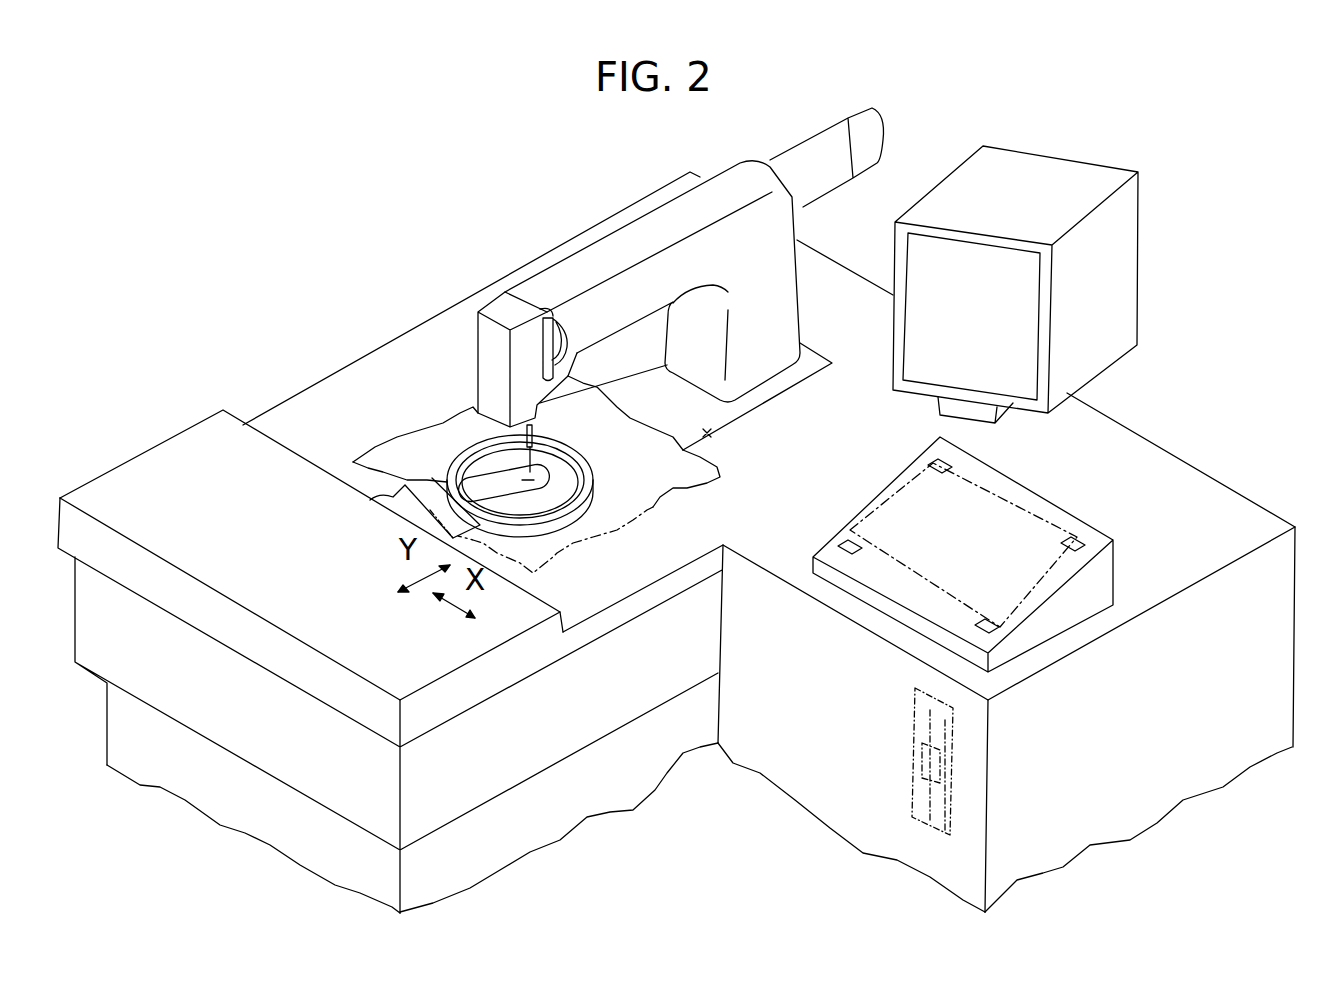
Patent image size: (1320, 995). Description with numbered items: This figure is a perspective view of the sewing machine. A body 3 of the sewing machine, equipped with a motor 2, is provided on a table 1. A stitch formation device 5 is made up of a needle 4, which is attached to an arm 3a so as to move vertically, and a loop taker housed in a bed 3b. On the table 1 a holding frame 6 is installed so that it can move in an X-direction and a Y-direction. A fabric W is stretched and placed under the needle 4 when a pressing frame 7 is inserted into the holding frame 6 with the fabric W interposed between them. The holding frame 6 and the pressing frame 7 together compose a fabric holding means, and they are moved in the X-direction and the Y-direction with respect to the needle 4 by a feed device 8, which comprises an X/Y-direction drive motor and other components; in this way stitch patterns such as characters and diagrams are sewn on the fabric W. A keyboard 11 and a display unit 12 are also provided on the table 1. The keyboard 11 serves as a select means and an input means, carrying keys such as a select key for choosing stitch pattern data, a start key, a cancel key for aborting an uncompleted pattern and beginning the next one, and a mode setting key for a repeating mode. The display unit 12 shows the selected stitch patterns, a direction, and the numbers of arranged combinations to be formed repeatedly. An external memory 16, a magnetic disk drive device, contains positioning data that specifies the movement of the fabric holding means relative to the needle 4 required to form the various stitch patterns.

The table 1 is at (337, 372).
The motor 2 is at (803, 130).
The body 3 is at (598, 243).
The arm 3a is at (478, 367).
The bed 3b is at (708, 432).
The needle 4 is at (575, 450).
The stitch formation device 5 is at (468, 428).
The holding frame 6 is at (558, 523).
The pressing frame 7 is at (447, 460).
The feed device 8 is at (373, 497).
The keyboard 11 is at (1068, 518).
The display unit 12 is at (1130, 267).
The external memory 16 is at (915, 760).
The fabric W is at (673, 515).